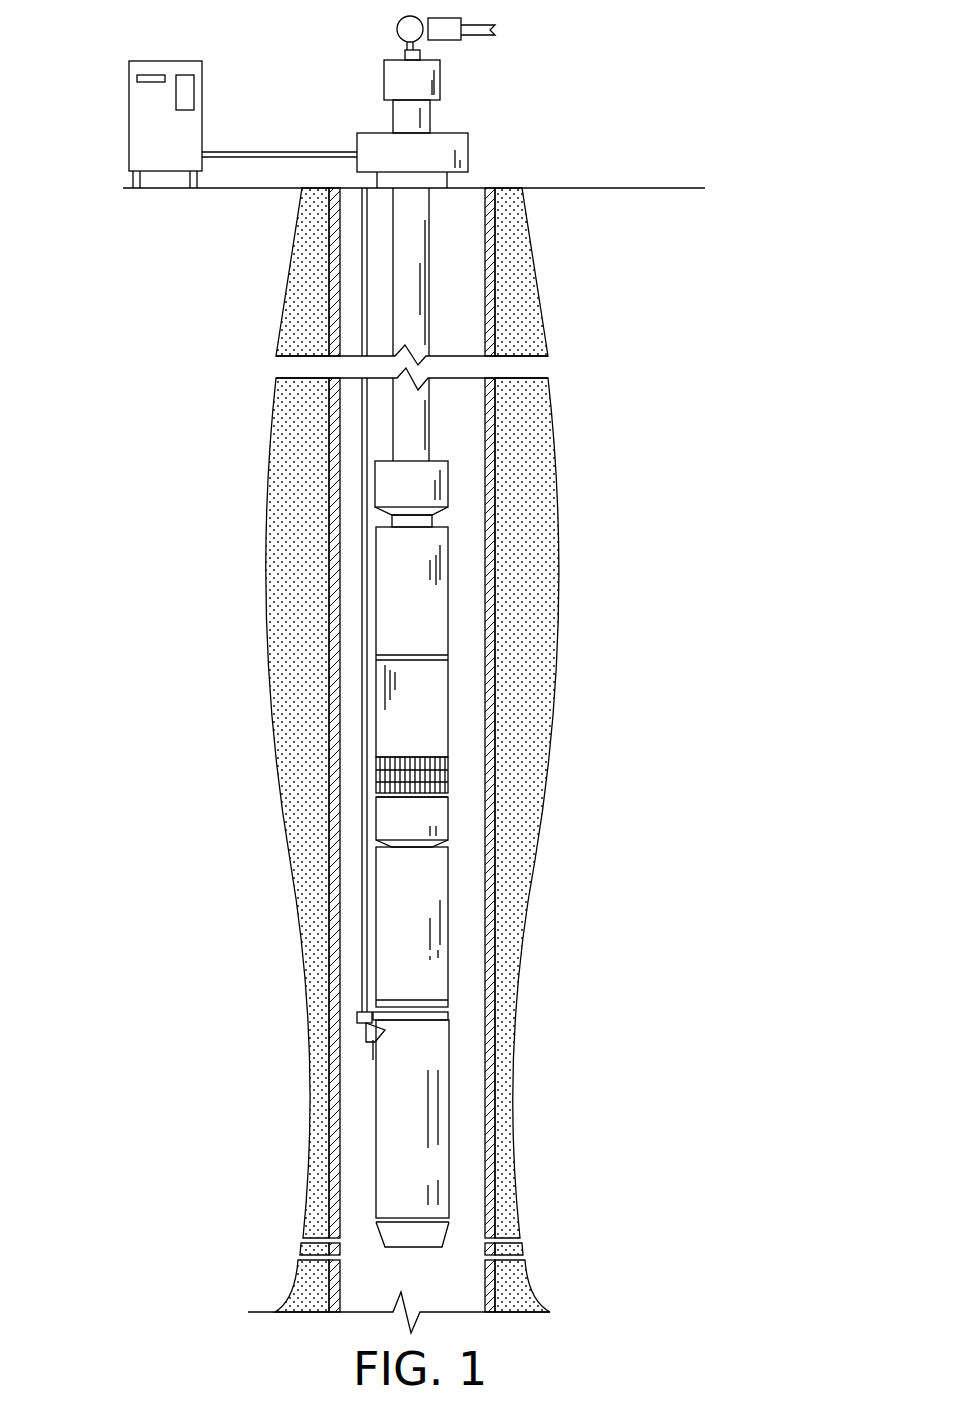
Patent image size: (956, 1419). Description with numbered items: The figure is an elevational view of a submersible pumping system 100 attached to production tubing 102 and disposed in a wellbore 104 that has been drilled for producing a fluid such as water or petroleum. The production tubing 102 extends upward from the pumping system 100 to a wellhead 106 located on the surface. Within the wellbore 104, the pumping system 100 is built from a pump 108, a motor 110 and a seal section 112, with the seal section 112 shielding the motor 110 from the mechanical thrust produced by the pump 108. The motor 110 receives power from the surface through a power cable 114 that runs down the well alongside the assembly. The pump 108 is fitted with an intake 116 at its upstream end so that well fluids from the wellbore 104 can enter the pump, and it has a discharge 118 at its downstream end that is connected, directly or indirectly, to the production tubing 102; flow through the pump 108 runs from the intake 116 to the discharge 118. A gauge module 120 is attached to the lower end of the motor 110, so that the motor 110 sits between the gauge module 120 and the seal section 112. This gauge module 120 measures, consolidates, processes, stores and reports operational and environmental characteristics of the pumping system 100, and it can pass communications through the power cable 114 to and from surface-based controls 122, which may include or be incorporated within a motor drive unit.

The pumping system 100 is at (462, 868).
The production tubing 102 is at (431, 235).
The wellbore 104 is at (493, 308).
The wellhead 106 is at (388, 82).
The pump 108 is at (449, 633).
The motor 110 is at (449, 1152).
The seal section 112 is at (449, 933).
The power cable 114 is at (366, 278).
The intake 116 is at (446, 768).
The discharge 118 is at (378, 487).
The gauge module 120 is at (385, 1225).
The surface-based controls 122 is at (157, 108).